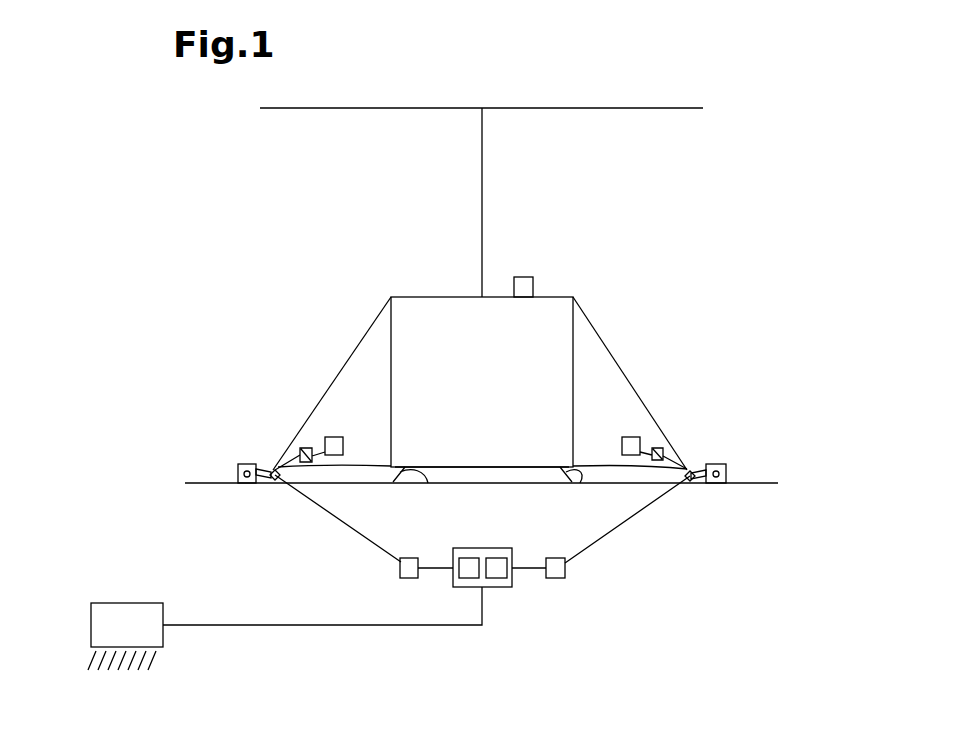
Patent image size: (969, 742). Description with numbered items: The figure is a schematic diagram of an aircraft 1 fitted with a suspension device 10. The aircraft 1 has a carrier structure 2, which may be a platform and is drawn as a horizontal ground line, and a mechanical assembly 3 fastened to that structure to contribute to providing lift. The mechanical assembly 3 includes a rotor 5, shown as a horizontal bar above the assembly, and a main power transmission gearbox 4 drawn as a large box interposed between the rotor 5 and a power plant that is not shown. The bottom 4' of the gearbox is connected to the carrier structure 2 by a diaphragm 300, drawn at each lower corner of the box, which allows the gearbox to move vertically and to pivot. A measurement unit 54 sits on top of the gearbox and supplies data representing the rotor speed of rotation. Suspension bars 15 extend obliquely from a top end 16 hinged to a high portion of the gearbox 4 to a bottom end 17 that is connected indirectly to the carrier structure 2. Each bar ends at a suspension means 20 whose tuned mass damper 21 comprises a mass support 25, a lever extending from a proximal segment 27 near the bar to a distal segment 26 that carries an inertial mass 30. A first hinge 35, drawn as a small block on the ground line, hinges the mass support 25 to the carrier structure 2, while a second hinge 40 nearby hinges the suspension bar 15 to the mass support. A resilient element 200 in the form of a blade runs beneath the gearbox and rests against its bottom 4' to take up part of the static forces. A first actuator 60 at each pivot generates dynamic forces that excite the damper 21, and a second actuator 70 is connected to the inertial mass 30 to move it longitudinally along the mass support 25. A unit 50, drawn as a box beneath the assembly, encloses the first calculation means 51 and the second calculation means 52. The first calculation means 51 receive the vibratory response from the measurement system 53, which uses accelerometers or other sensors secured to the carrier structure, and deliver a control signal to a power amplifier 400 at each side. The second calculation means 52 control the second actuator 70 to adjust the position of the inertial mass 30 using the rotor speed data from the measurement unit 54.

The aircraft 1 is at (704, 193).
The carrier structure 2 is at (190, 485).
The mechanical assembly 3 is at (264, 200).
The main power transmission gearbox 4 is at (482, 382).
The bottom of the MGB 4' is at (482, 438).
The rotor 5 is at (504, 88).
The suspension device 10 is at (180, 397).
The suspension bar 15 is at (360, 344).
The top end 16 is at (360, 310).
The bottom end 17 is at (261, 430).
The suspension means 20 is at (182, 468).
The tuned mass damper 21 is at (262, 492).
The mass support 25 is at (275, 462).
The distal segment 26 is at (328, 428).
The proximal segment 27 is at (258, 454).
The inertial mass 30 is at (345, 434).
The first hinge 35 is at (245, 462).
The second hinge 40 is at (300, 446).
The control unit 50 is at (475, 575).
The first calculation means 51 is at (470, 579).
The second calculation means 52 is at (497, 579).
The measurement system 53 is at (286, 617).
The measurement unit 54 is at (524, 275).
The first actuator 60 is at (283, 483).
The second actuator 70 is at (308, 478).
The resilient element 200 is at (618, 480).
The diaphragm 300 is at (428, 483).
The power amplifier 400 is at (400, 573).